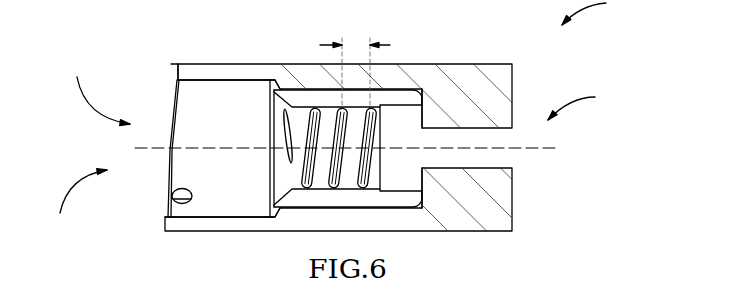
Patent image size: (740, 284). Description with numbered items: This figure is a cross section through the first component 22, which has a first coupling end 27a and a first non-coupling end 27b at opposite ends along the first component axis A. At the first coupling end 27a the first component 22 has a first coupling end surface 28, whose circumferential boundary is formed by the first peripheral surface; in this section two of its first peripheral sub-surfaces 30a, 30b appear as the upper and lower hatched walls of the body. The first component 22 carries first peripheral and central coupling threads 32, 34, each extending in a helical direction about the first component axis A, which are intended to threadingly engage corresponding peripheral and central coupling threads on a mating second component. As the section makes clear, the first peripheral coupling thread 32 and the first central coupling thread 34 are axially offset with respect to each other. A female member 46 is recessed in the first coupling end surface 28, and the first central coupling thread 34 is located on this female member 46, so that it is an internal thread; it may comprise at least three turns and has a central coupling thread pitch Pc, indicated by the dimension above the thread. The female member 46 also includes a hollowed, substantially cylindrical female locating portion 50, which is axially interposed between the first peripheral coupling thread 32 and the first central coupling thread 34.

The first component 22 is at (596, 12).
The first coupling end 27a is at (72, 203).
The first non-coupling end 27b is at (590, 102).
The first coupling end surface 28 is at (172, 100).
The first peripheral sub-surface 30a is at (458, 231).
The first peripheral sub-surface 30b is at (457, 64).
The first peripheral coupling thread 32 is at (170, 180).
The first central coupling thread 34 is at (300, 108).
The female member 46 is at (96, 90).
The female locating portion 50 is at (215, 95).
The central coupling thread pitch Pc is at (355, 44).
The first component axis A is at (355, 148).